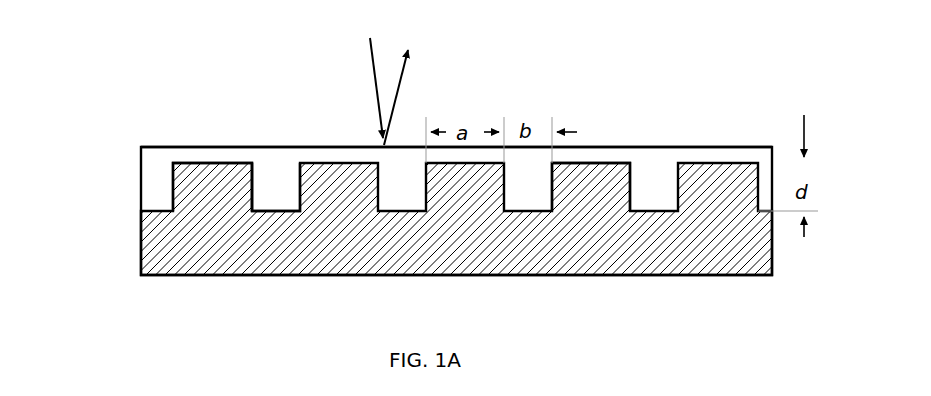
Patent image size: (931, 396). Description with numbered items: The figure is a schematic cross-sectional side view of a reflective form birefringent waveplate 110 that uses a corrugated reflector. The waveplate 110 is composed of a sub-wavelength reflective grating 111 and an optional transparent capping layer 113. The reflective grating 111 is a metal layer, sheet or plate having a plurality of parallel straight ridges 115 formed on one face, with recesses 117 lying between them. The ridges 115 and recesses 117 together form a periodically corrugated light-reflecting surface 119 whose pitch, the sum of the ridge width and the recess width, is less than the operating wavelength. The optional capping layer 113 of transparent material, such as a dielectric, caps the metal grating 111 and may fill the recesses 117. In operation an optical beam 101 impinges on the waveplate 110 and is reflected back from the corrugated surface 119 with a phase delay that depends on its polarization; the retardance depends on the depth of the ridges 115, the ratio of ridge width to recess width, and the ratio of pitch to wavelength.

The reflective form birefringent waveplate 110 is at (163, 108).
The sub-wavelength reflective grating 111 is at (150, 250).
The transparent capping layer 113 is at (158, 158).
The ridges 115 is at (222, 163).
The recesses 117 is at (268, 193).
The corrugated light-reflecting surface 119 is at (618, 156).
The optical beam 101 is at (374, 53).